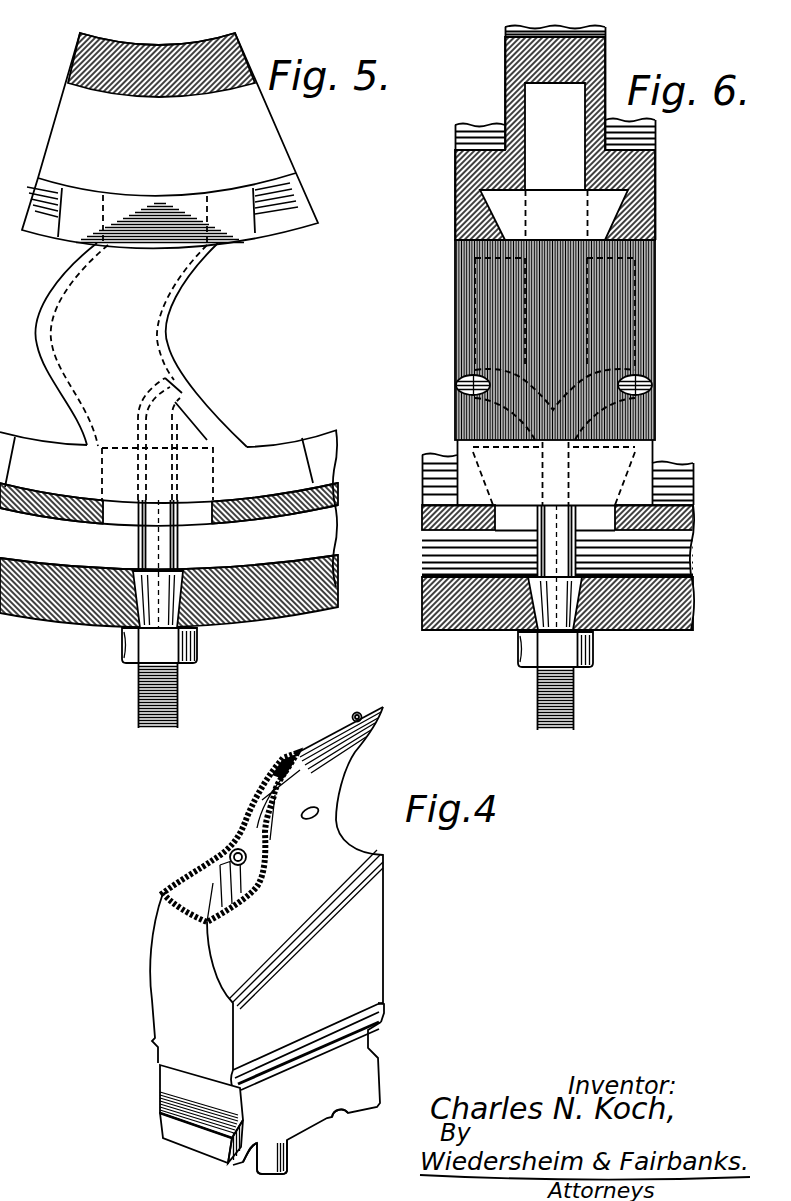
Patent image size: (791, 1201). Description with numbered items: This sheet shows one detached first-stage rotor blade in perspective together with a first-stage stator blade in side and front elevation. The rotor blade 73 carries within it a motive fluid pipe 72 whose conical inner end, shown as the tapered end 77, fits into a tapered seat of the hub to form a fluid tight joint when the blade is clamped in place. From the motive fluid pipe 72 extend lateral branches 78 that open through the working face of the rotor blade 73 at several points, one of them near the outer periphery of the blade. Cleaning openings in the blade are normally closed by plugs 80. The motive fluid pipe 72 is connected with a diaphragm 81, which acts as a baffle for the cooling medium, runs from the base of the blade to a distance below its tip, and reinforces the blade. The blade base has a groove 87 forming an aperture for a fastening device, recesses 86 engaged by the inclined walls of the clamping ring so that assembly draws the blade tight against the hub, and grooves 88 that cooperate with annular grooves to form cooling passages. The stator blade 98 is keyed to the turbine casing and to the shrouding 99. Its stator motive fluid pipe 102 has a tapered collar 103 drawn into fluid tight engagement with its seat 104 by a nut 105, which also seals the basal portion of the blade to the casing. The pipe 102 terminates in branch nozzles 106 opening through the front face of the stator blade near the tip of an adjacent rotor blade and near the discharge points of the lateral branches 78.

In FIG. 4, the motive fluid pipe 72 is at (263, 813).
In FIG. 4, the rotor blade 73 is at (289, 940).
In FIG. 4, the tapered end of motive fluid pipe 77 is at (275, 1160).
In FIG. 4, the lateral branch 78 is at (222, 860).
In FIG. 4, the plug 80 is at (352, 716).
In FIG. 4, the diaphragm 81 is at (217, 885).
In FIG. 4, the recess 86 is at (172, 1087).
In FIG. 4, the groove 87 is at (158, 1045).
In FIG. 4, the groove 88 is at (340, 1115).
In FIG. 5, the stator blade 98 is at (177, 295).
In FIG. 6, the stator blade 98 is at (647, 292).
In FIG. 5, the shrouding 99 is at (302, 175).
In FIG. 6, the shrouding 99 is at (652, 192).
In FIG. 5, the stator motive fluid pipe 102 is at (177, 710).
In FIG. 6, the stator motive fluid pipe 102 is at (573, 705).
In FIG. 5, the tapered collar 103 is at (217, 622).
In FIG. 6, the tapered collar 103 is at (587, 613).
In FIG. 5, the seat 104 is at (135, 603).
In FIG. 6, the seat 104 is at (533, 608).
In FIG. 5, the nut 105 is at (197, 653).
In FIG. 6, the nut 105 is at (592, 653).
In FIG. 5, the branch nozzle 106 is at (180, 387).
In FIG. 6, the branch nozzle 106 is at (457, 388).